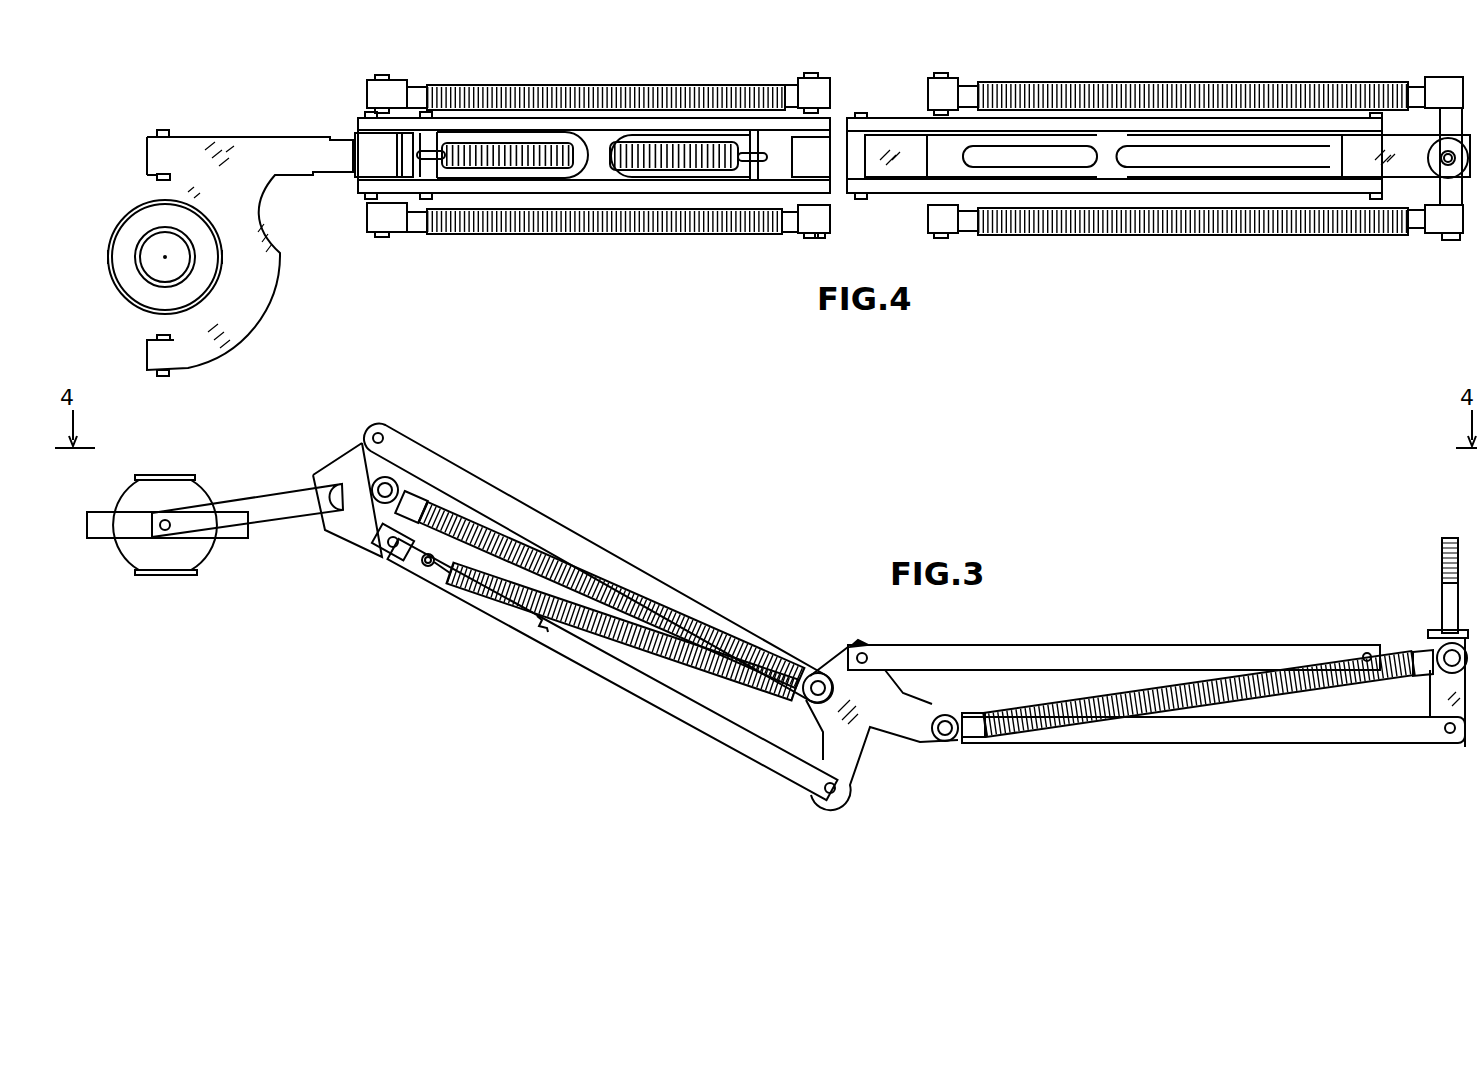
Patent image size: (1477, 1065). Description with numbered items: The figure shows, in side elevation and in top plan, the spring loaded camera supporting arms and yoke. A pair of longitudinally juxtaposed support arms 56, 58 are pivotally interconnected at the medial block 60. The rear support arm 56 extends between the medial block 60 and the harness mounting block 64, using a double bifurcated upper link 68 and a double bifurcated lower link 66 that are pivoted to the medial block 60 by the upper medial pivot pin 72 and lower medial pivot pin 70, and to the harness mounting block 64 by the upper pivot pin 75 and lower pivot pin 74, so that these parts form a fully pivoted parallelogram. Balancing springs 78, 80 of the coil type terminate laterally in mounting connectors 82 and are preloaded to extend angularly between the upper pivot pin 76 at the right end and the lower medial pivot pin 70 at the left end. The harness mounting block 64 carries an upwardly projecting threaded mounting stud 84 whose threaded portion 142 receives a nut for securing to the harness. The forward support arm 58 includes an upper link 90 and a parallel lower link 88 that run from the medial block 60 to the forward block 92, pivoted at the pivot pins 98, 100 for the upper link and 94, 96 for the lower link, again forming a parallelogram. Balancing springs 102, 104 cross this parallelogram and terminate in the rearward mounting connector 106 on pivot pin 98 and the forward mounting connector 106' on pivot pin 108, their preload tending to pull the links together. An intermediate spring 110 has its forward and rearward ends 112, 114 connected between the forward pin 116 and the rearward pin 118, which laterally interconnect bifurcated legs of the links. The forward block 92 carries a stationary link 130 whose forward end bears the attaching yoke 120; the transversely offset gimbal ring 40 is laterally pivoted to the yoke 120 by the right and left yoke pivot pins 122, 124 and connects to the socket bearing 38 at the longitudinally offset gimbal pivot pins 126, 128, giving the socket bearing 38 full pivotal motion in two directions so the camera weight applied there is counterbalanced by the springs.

In FIG. 4, the socket bearing 38 is at (135, 220).
In FIG. 3, the socket bearing 38 is at (178, 495).
In FIG. 4, the gimbal ring 40 is at (122, 320).
In FIG. 3, the gimbal ring 40 is at (102, 540).
In FIG. 4, the support arm 56 is at (1105, 185).
In FIG. 3, the support arm 56 is at (1172, 645).
In FIG. 4, the forward support arm 58 is at (705, 196).
In FIG. 3, the forward support arm 58 is at (680, 715).
In FIG. 4, the medial block 60 is at (887, 158).
In FIG. 3, the medial block 60 is at (860, 760).
In FIG. 4, the harness mounting block 64 is at (1402, 138).
In FIG. 3, the harness mounting block 64 is at (1436, 690).
In FIG. 4, the lower link 66 is at (1203, 140).
In FIG. 3, the lower link 66 is at (1312, 745).
In FIG. 4, the upper link 68 is at (1100, 128).
In FIG. 3, the upper link 68 is at (1068, 645).
In FIG. 4, the lower medial pivot pin 70 is at (950, 78).
In FIG. 3, the lower medial pivot pin 70 is at (946, 742).
In FIG. 4, the upper medial pivot pin 72 is at (857, 200).
In FIG. 3, the upper medial pivot pin 72 is at (867, 655).
In FIG. 3, the lower pivot pin 74 is at (1450, 738).
In FIG. 4, the upper pivot pin 75 is at (1365, 210).
In FIG. 3, the upper pivot pin 75 is at (1365, 653).
In FIG. 4, the upper pivot pin 76 is at (1452, 240).
In FIG. 3, the upper pivot pin 76 is at (1445, 652).
In FIG. 4, the balancing spring 78 is at (1140, 88).
In FIG. 4, the balancing spring 80 is at (1124, 242).
In FIG. 3, the balancing spring 80 is at (1120, 735).
In FIG. 4, the mounting connector 82 is at (937, 95).
In FIG. 3, the mounting connector 82 is at (958, 716).
In FIG. 4, the threaded mounting stud 84 is at (1447, 162).
In FIG. 3, the threaded mounting stud 84 is at (1440, 590).
In FIG. 3, the lower link 88 is at (527, 614).
In FIG. 4, the upper link 90 is at (587, 175).
In FIG. 3, the upper link 90 is at (580, 545).
In FIG. 4, the forward block 92 is at (345, 170).
In FIG. 3, the forward block 92 is at (350, 545).
In FIG. 3, the pivot pin 94 is at (831, 795).
In FIG. 3, the pivot pin 96 is at (385, 560).
In FIG. 4, the pivot pin 98 is at (822, 232).
In FIG. 3, the pivot pin 98 is at (828, 680).
In FIG. 4, the pivot pin 100 is at (366, 200).
In FIG. 3, the pivot pin 100 is at (378, 432).
In FIG. 4, the balancing spring 102 is at (635, 85).
In FIG. 4, the balancing spring 104 is at (633, 234).
In FIG. 3, the balancing spring 104 is at (638, 596).
In FIG. 4, the rearward mounting connector 106 is at (813, 162).
In FIG. 3, the rearward mounting connector 106 is at (801, 655).
In FIG. 4, the forward mounting connector 106' is at (408, 161).
In FIG. 3, the forward mounting connector 106' is at (439, 460).
In FIG. 3, the pivot pin 108 is at (388, 483).
In FIG. 4, the intermediate spring 110 is at (700, 140).
In FIG. 3, the intermediate spring 110 is at (487, 592).
In FIG. 4, the forward end 112 is at (438, 158).
In FIG. 3, the forward end 112 is at (437, 585).
In FIG. 4, the rearward end 114 is at (740, 165).
In FIG. 4, the forward pin 116 is at (428, 200).
In FIG. 3, the forward pin 116 is at (422, 585).
In FIG. 4, the rearward pin 118 is at (762, 135).
In FIG. 4, the attaching yoke 120 is at (275, 280).
In FIG. 3, the attaching yoke 120 is at (188, 540).
In FIG. 4, the right yoke pivot pin 122 is at (163, 130).
In FIG. 4, the left yoke pivot pin 124 is at (168, 378).
In FIG. 3, the left yoke pivot pin 124 is at (150, 580).
In FIG. 4, the gimbal pivot pin 126 is at (105, 258).
In FIG. 4, the gimbal pivot pin 128 is at (220, 256).
In FIG. 4, the link 130 is at (293, 145).
In FIG. 3, the link 130 is at (273, 500).
In FIG. 3, the threaded portion 142 is at (1442, 545).